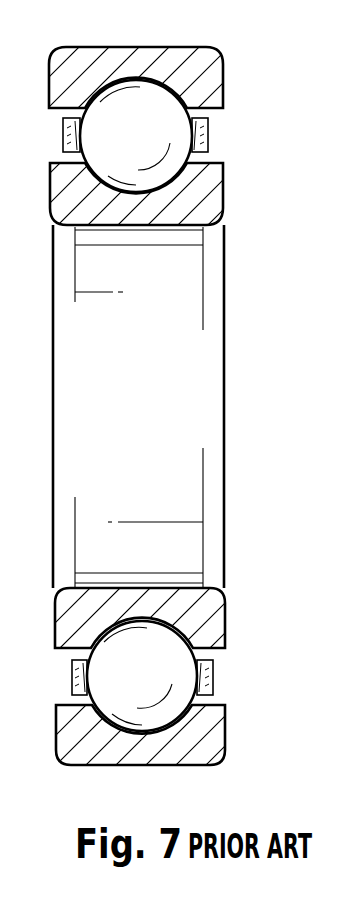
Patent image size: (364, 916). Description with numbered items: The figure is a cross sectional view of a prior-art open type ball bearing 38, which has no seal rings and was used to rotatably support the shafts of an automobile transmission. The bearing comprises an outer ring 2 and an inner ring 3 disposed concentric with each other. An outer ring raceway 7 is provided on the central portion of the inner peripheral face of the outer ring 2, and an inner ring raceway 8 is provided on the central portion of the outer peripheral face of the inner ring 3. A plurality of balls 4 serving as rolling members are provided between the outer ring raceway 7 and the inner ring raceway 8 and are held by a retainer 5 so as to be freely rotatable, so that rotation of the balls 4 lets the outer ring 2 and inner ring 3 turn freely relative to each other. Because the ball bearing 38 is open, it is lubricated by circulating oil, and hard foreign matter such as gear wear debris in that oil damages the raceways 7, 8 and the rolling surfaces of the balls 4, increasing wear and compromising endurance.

The open type ball bearing 38 is at (248, 52).
The outer ring 2 is at (213, 745).
The inner ring 3 is at (203, 611).
The ball 4 is at (170, 121).
The retainer 5 is at (72, 677).
The outer ring raceway 7 is at (140, 82).
The inner ring raceway 8 is at (160, 179).